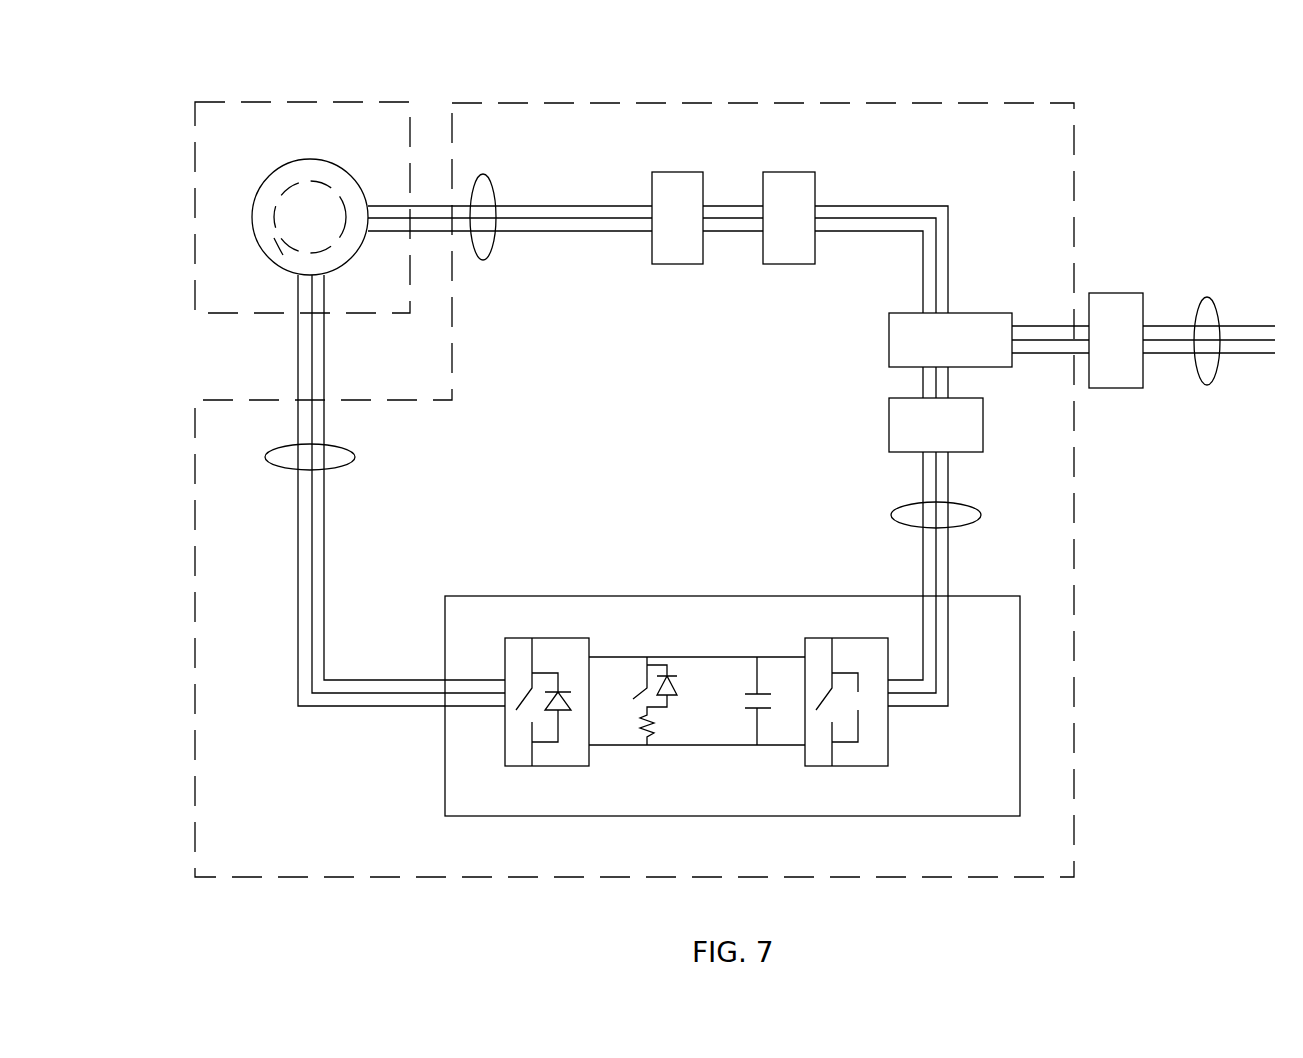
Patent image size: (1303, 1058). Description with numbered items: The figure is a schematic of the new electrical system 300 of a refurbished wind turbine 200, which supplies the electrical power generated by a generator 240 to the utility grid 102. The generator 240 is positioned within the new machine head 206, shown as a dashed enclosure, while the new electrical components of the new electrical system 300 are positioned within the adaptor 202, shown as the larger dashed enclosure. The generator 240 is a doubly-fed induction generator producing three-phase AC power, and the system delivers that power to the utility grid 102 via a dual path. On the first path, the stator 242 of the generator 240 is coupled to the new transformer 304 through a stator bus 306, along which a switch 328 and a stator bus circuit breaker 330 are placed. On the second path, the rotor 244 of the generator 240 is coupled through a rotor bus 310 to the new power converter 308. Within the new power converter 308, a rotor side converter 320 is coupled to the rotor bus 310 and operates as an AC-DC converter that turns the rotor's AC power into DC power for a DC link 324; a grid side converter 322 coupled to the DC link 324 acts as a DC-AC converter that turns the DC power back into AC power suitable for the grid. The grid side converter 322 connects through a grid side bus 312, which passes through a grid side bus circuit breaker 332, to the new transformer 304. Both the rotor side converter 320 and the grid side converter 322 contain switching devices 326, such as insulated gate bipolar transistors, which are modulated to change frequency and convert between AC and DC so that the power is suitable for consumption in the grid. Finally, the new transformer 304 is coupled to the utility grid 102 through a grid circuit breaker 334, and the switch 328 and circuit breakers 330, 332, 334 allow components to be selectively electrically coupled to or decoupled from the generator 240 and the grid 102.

The refurbished wind turbine 200 is at (208, 100).
The new machine head 206 is at (241, 135).
The generator 240 is at (310, 160).
The stator 242 is at (345, 265).
The rotor 244 is at (268, 265).
The new electrical system 300 is at (545, 130).
The adaptor 202 is at (671, 382).
The stator bus 306 is at (483, 262).
The switch 328 is at (678, 265).
The stator bus circuit breaker 330 is at (790, 265).
The new transformer 304 is at (889, 340).
The grid side bus circuit breaker 332 is at (889, 425).
The grid side bus 312 is at (891, 515).
The grid circuit breaker 334 is at (1118, 293).
The utility grid 102 is at (1207, 297).
The rotor bus 310 is at (355, 457).
The new power converter 308 is at (650, 596).
The rotor side converter 320 is at (545, 638).
The grid side converter 322 is at (845, 638).
The DC link 324 is at (697, 657).
The switching devices 326 is at (577, 755).